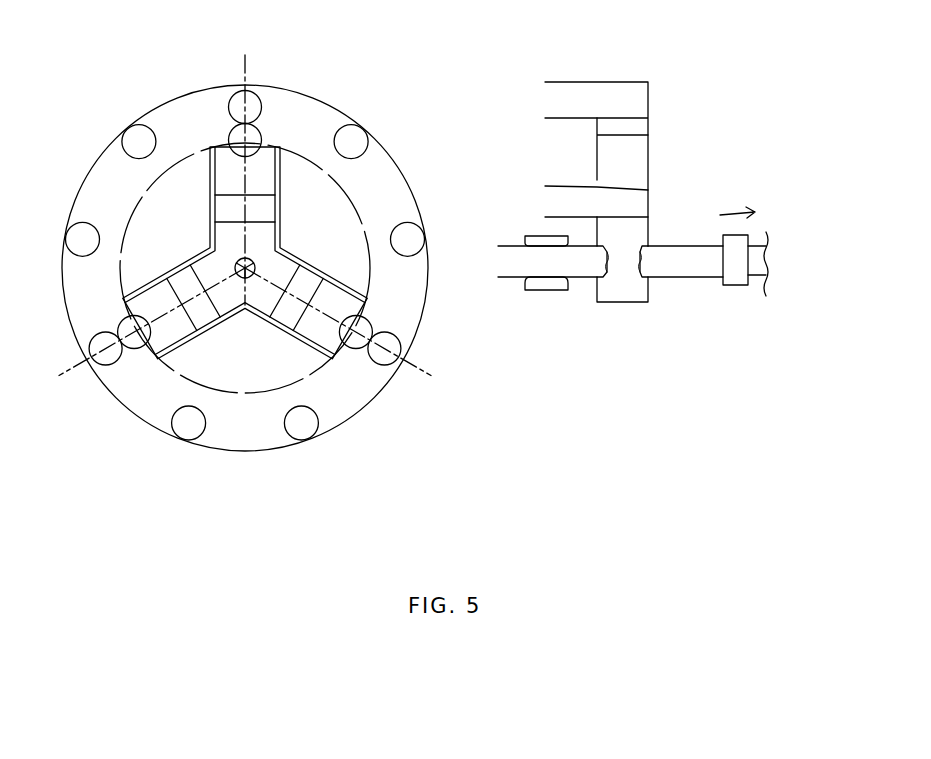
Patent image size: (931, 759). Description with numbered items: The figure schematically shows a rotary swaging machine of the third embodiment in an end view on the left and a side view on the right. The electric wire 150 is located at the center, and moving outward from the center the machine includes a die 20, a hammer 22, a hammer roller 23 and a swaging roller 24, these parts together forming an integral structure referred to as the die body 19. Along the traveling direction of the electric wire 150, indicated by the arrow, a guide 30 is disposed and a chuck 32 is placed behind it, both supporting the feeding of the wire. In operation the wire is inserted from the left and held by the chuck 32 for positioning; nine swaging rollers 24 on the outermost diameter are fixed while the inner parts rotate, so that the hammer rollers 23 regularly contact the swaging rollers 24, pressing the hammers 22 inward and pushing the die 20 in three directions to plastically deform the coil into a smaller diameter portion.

The die body 19 is at (522, 79).
The die 20 is at (290, 252).
The hammer 22 is at (597, 153).
The hammer roller 23 is at (265, 132).
The swaging roller 24 is at (373, 146).
The guide 30 is at (547, 292).
The chuck 32 is at (733, 287).
The electric wire 150 is at (758, 241).